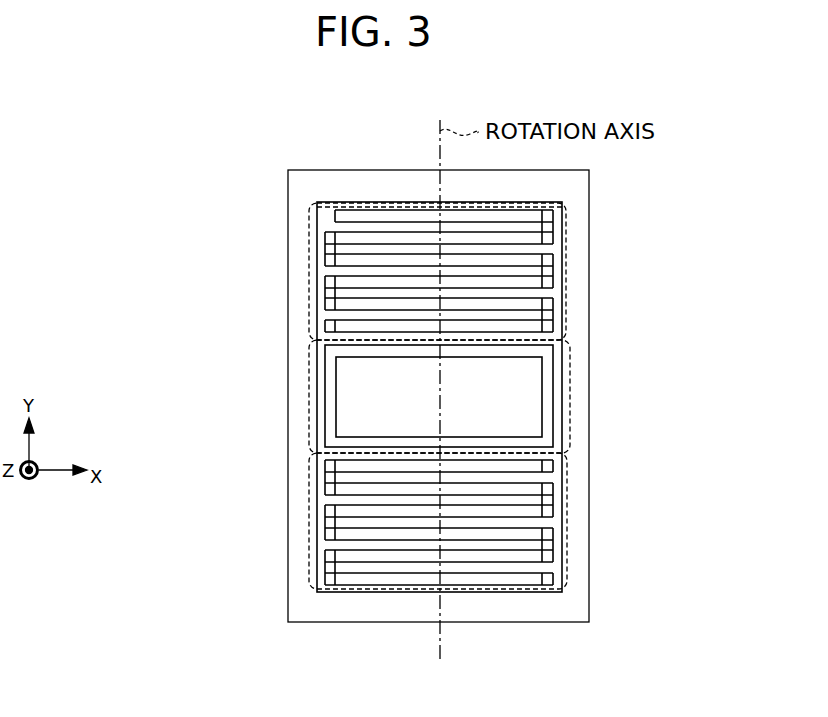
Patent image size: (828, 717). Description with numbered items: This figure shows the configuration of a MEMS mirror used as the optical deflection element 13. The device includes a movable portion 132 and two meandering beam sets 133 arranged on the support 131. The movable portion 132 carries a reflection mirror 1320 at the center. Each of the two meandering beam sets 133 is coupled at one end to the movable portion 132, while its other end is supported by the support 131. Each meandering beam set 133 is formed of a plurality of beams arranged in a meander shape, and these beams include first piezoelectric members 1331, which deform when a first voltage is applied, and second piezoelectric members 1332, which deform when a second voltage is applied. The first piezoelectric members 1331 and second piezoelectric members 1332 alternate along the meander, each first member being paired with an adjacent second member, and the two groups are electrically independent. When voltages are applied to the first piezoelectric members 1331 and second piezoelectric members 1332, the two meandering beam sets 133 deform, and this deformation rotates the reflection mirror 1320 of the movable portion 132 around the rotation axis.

The optical deflection element 13 is at (176, 128).
The support 131 is at (310, 185).
The movable portion 132 is at (582, 395).
The meandering beam sets 133 is at (362, 200).
The reflection mirror 1320 is at (355, 405).
The first piezoelectric members 1331 is at (340, 307).
The second piezoelectric members 1332 is at (533, 327).